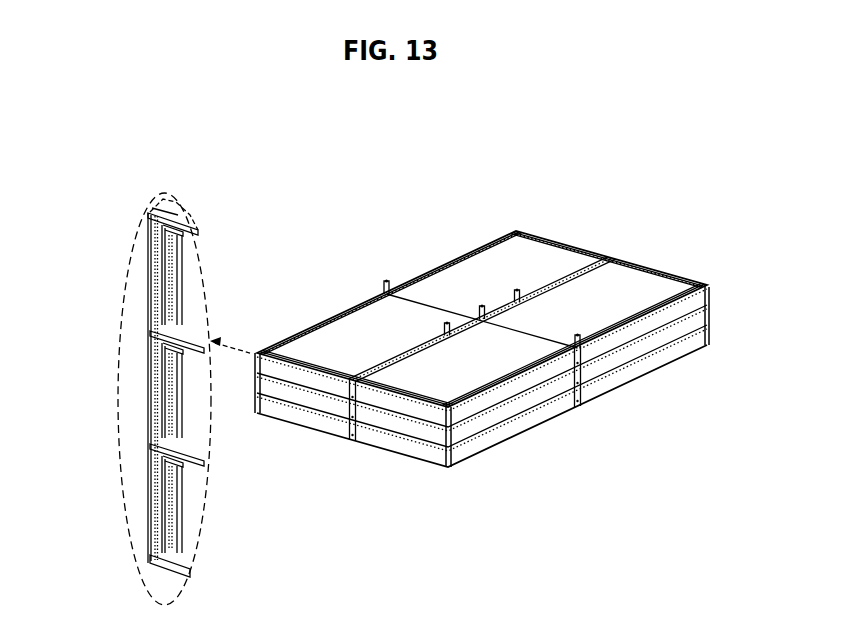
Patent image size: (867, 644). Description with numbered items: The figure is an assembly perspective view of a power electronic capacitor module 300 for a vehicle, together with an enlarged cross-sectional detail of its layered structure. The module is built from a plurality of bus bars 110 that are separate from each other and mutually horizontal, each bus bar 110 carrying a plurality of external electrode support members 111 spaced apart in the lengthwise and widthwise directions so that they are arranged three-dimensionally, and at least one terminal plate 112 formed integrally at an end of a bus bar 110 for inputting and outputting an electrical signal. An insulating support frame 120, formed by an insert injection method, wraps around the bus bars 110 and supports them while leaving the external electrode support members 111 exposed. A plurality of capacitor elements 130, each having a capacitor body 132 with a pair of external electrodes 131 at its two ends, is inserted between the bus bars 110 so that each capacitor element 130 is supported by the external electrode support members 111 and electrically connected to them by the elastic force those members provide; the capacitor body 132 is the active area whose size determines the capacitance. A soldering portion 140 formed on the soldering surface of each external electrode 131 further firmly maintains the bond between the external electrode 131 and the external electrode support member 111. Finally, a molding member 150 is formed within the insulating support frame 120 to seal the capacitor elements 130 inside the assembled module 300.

The power electronic capacitor module 300 is at (421, 194).
The bus bar 110 is at (150, 262).
The external electrode support member 111 is at (658, 318).
The terminal plate 112 is at (387, 280).
The insulating support frame 120 is at (155, 203).
The capacitor element 130 is at (537, 251).
The external electrode 131 is at (592, 268).
The capacitor body 132 is at (654, 284).
The soldering portion 140 is at (163, 232).
The molding member 150 is at (566, 246).